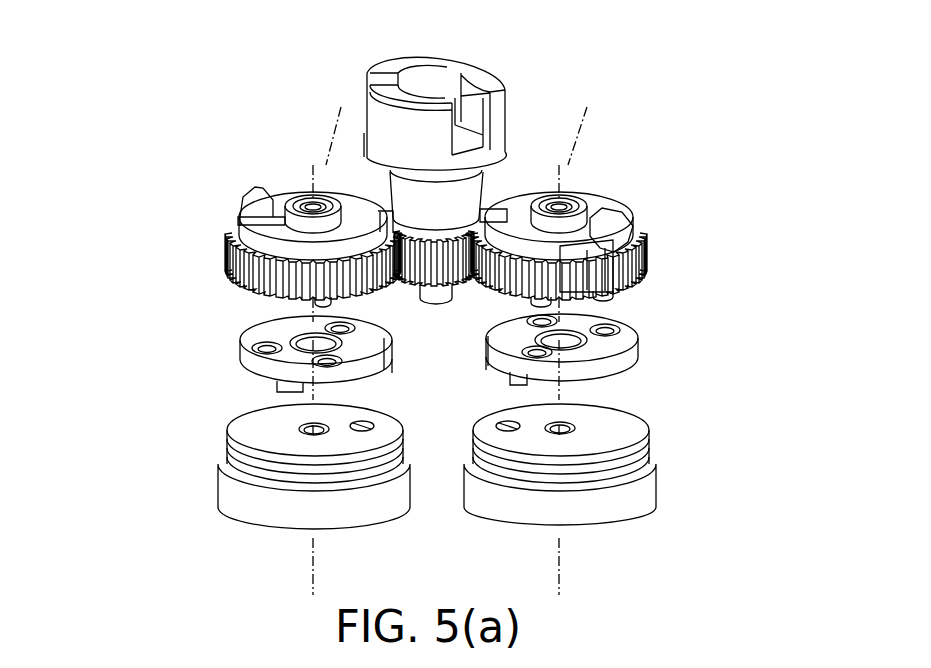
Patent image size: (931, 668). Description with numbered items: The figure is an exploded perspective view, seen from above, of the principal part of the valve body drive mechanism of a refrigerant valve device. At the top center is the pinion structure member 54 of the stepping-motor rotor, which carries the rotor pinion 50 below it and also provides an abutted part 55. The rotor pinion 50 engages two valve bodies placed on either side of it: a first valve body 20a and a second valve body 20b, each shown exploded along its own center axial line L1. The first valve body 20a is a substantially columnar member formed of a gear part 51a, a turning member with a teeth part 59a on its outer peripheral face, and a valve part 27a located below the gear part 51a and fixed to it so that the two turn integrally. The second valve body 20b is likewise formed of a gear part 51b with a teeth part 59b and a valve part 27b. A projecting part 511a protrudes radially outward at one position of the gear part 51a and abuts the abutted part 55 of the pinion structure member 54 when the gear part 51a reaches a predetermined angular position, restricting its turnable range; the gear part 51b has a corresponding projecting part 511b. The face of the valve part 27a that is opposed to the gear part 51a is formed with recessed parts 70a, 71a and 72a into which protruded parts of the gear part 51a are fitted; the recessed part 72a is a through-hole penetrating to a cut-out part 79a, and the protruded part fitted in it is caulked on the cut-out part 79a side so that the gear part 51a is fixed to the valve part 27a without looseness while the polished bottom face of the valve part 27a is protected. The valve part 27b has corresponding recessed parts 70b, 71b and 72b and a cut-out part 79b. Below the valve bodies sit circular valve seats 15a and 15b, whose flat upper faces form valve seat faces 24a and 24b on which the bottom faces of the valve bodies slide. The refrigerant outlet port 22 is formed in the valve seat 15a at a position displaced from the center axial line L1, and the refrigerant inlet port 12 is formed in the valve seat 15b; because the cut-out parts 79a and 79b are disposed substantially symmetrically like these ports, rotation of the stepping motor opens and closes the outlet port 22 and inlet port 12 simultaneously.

The center axial line L1 is at (457, 339).
The pinion structure member 54 is at (408, 53).
The abutted part 55 is at (404, 220).
The rotor pinion 50 is at (428, 303).
The first valve body 20a is at (626, 257).
The second valve body 20b is at (252, 271).
The gear part 51a is at (614, 205).
The gear part 51b is at (242, 206).
The projecting part 511a is at (637, 198).
The projecting part 511b is at (272, 186).
The teeth part 59a is at (650, 263).
The teeth part 59b is at (223, 261).
The valve part 27a is at (599, 350).
The valve part 27b is at (252, 363).
The recessed part 70a is at (538, 350).
The recessed part 70b is at (348, 327).
The recessed part 71a is at (614, 332).
The recessed part 71b is at (267, 349).
The recessed part 72a is at (543, 320).
The recessed part 72b is at (347, 356).
The cut-out part 79a is at (497, 375).
The cut-out part 79b is at (366, 390).
The valve seat face 24a is at (610, 492).
The valve seat face 24b is at (261, 492).
The valve seat 15a is at (650, 529).
The valve seat 15b is at (219, 524).
The refrigerant inlet port 12 is at (366, 423).
The refrigerant outlet port 22 is at (503, 421).